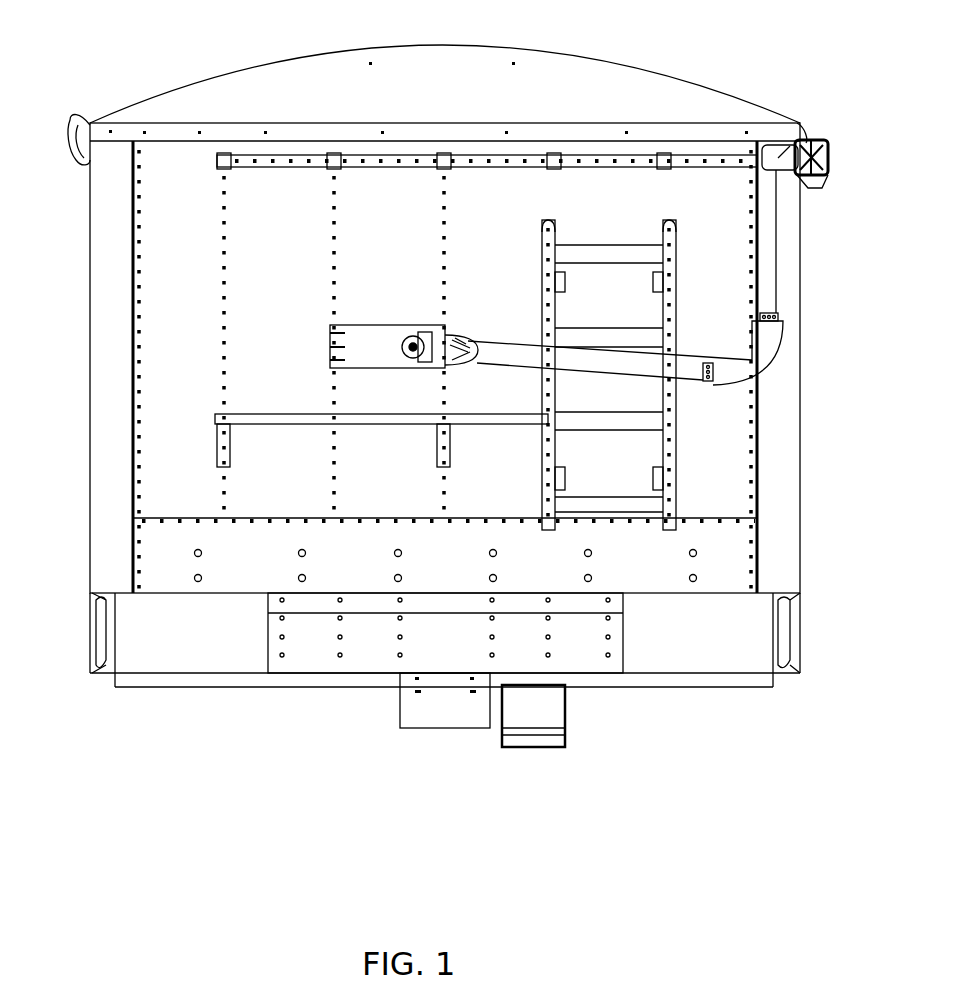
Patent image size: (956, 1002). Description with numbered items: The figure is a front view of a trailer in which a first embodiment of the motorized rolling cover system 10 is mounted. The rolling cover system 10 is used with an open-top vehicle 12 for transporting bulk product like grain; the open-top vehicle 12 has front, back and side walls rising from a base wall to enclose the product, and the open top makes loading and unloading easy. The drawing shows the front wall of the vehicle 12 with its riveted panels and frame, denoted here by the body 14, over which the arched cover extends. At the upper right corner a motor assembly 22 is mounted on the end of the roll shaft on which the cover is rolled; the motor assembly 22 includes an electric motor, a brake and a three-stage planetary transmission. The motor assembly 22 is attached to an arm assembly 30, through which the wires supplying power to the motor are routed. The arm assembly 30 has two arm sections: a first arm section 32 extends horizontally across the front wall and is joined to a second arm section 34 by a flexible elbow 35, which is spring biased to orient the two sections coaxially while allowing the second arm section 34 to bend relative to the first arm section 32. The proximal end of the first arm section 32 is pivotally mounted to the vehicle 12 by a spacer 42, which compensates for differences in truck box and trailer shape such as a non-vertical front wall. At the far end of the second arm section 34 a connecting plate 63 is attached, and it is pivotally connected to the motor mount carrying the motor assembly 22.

The rolling cover system 10 is at (750, 42).
The open-top vehicle 12 is at (165, 137).
The container body 14 is at (175, 461).
The motor assembly 22 is at (806, 152).
The arm assembly 30 is at (829, 284).
The first arm section 32 is at (667, 368).
The second arm section 34 is at (770, 257).
The flexible elbow 35 is at (764, 358).
The spacer 42 is at (404, 346).
The connecting plate 63 is at (806, 143).